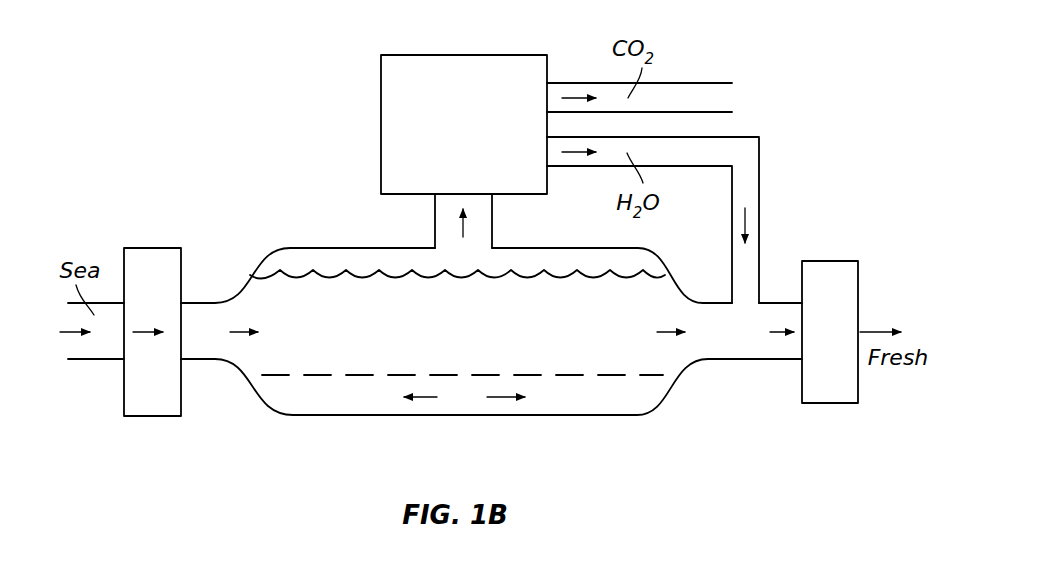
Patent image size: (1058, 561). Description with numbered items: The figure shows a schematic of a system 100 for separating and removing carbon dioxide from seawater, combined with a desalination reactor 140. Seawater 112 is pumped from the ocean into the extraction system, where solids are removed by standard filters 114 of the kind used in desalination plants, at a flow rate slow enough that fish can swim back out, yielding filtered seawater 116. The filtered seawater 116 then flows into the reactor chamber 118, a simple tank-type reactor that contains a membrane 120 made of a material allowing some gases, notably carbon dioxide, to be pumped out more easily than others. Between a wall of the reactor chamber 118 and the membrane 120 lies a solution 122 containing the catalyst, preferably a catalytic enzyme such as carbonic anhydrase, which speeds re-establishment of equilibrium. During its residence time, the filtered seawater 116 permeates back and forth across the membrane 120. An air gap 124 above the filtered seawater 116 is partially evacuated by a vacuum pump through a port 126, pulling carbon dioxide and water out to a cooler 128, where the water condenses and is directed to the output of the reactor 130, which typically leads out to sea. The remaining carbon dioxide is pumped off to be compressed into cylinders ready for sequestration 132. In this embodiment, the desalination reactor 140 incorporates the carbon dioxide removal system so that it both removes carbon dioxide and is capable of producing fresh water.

The system 100 is at (204, 68).
The seawater 112 is at (69, 331).
The filters 114 is at (172, 380).
The filtered seawater 116 is at (220, 332).
The reactor chamber 118 is at (316, 421).
The membrane 120 is at (437, 366).
The solution 122 is at (464, 397).
The air gap 124 is at (464, 239).
The port 126 is at (427, 228).
The cooler 128 is at (443, 138).
The output of the reactor 130 is at (759, 332).
The sequestration 132 is at (703, 98).
The desalination reactor 140 is at (812, 292).